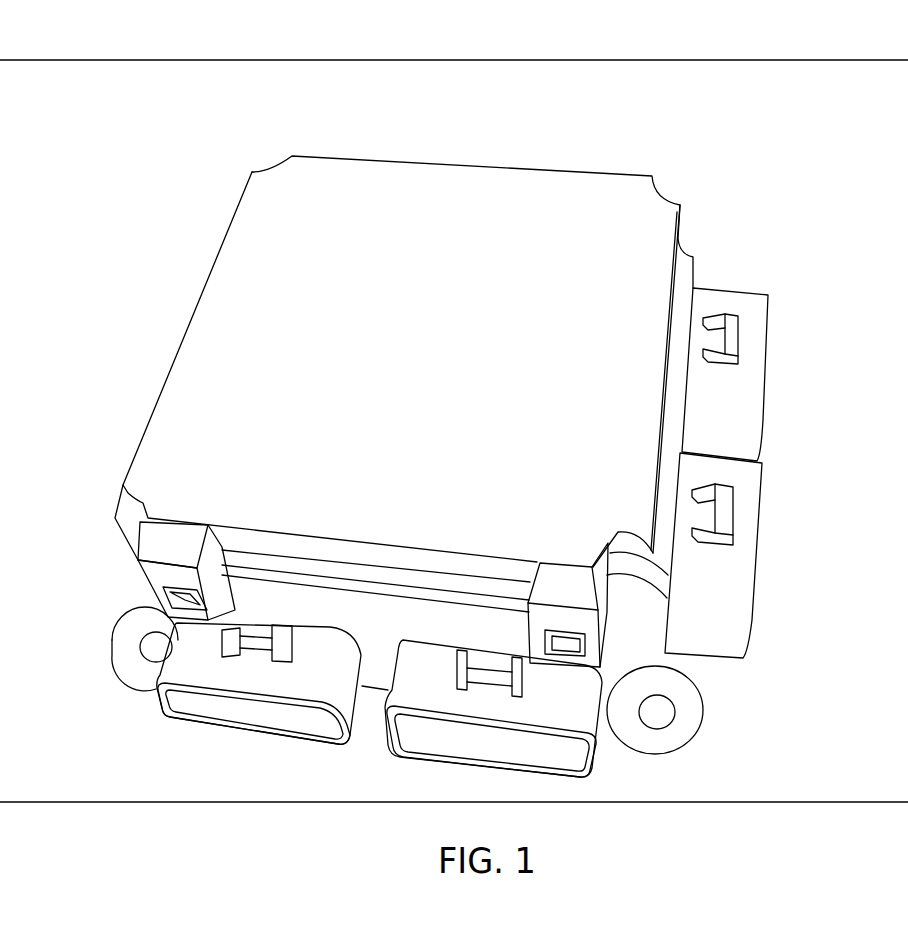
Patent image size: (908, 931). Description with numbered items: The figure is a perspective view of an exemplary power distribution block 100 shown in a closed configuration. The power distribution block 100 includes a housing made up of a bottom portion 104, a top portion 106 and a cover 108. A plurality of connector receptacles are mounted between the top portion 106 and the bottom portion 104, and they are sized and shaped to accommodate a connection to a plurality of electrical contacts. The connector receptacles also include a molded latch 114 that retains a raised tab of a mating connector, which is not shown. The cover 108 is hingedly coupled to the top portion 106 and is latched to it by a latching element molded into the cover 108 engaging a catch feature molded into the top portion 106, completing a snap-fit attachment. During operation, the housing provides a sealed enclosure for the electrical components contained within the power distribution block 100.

The power distribution block 100 is at (332, 37).
The bottom portion 104 is at (665, 667).
The top portion 106 is at (695, 267).
The cover 108 is at (542, 212).
The molded latch 114 is at (737, 332).